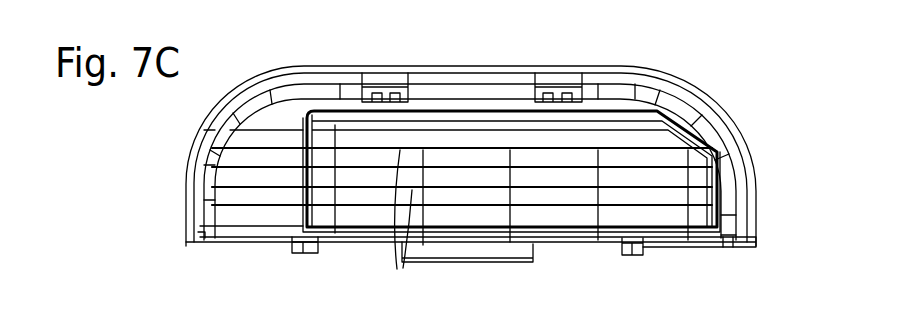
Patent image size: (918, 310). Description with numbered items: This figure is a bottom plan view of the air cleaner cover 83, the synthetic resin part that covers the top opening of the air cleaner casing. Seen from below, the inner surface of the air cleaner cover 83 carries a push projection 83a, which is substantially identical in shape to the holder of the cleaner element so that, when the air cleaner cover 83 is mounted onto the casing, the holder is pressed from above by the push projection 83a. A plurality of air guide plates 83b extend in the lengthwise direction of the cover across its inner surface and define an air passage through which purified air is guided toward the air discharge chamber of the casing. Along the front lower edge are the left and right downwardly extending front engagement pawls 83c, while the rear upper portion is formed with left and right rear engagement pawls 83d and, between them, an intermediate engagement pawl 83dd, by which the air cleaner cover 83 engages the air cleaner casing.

The air cleaner cover 83 is at (760, 119).
The push projection 83a is at (303, 182).
The air guide plates 83b is at (400, 226).
The front engagement pawls 83c is at (392, 82).
The rear engagement pawls 83d is at (306, 243).
The intermediate engagement pawl 83dd is at (487, 252).